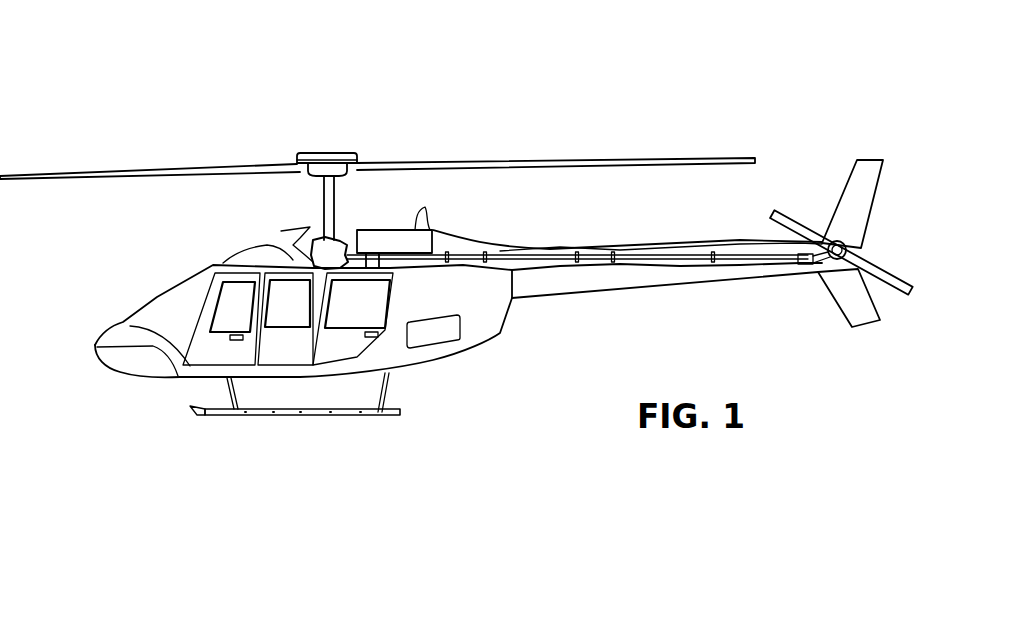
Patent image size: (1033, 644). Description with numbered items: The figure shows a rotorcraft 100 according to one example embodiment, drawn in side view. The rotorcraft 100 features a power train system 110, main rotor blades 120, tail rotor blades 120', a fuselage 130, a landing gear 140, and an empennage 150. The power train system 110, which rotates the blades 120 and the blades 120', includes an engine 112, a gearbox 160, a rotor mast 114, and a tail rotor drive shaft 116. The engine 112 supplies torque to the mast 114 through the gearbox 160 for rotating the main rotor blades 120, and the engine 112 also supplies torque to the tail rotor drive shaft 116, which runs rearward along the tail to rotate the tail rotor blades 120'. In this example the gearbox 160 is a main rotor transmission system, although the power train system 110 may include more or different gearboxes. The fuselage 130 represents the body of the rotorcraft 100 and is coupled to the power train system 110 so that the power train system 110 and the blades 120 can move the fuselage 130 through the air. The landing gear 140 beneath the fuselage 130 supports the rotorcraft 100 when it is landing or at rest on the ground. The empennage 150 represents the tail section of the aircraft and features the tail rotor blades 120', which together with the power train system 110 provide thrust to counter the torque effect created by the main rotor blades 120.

The rotorcraft 100 is at (176, 91).
The power train system 110 is at (354, 138).
The engine 112 is at (436, 238).
The rotor mast 114 is at (323, 211).
The tail rotor drive shaft 116 is at (662, 255).
The main rotor blades 120 is at (377, 144).
The tail rotor blades 120' is at (841, 230).
The fuselage 130 is at (438, 362).
The landing gear 140 is at (218, 417).
The empennage 150 is at (598, 291).
The gearbox 160 is at (303, 255).